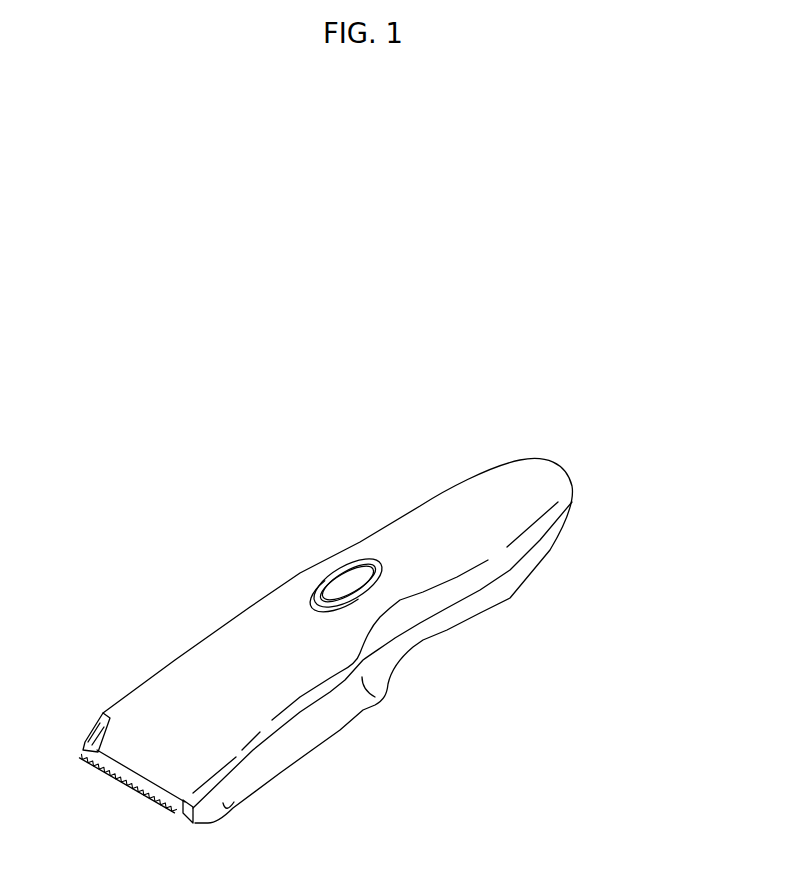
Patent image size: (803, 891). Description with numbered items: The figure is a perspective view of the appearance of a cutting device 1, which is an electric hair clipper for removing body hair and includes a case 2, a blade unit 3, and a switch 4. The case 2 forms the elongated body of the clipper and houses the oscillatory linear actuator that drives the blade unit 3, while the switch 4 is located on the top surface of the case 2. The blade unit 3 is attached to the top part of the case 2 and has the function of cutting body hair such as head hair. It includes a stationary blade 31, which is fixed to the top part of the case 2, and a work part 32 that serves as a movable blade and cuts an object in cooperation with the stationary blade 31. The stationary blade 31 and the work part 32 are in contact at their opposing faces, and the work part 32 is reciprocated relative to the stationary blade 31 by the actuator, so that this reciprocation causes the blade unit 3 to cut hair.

The cutting device 1 is at (586, 501).
The case 2 is at (237, 622).
The blade unit 3 is at (116, 783).
The stationary blade 31 is at (177, 813).
The work part 32 is at (168, 801).
The switch 4 is at (346, 578).